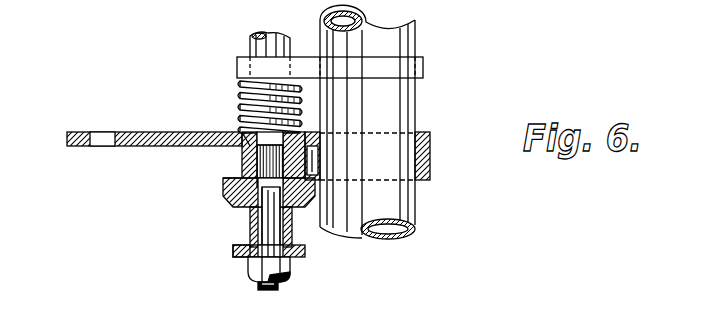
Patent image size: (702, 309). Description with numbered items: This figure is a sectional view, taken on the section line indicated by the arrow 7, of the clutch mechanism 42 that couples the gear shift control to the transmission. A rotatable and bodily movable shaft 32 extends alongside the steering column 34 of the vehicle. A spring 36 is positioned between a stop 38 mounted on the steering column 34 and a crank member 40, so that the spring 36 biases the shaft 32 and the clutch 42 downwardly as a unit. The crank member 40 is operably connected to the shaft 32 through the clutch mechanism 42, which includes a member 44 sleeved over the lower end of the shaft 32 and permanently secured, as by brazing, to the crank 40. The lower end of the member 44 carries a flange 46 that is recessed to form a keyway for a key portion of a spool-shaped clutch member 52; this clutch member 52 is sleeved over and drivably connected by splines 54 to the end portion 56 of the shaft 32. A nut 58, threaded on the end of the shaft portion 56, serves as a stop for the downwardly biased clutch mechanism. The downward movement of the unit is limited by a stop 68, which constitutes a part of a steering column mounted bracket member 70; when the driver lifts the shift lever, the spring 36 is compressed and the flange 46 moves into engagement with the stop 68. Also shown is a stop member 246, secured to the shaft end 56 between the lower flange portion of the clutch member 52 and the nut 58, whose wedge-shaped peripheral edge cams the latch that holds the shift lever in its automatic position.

The section line of Figure 7 is at (262, 12).
The shaft 32 is at (250, 45).
The steering column 34 is at (416, 212).
The spring 36 is at (242, 98).
The stop 38 is at (392, 65).
The crank member 40 is at (140, 132).
The clutch mechanism 42 is at (222, 200).
The member 44 is at (240, 159).
The flange 46 is at (223, 185).
The clutch member 52 is at (177, 0).
The splines 54 is at (248, 148).
The end portion of the shaft 56 is at (292, 255).
The nut 58 is at (259, 284).
The stop 68 is at (289, 207).
The bracket member 70 is at (431, 146).
The stop member 246 is at (243, 257).